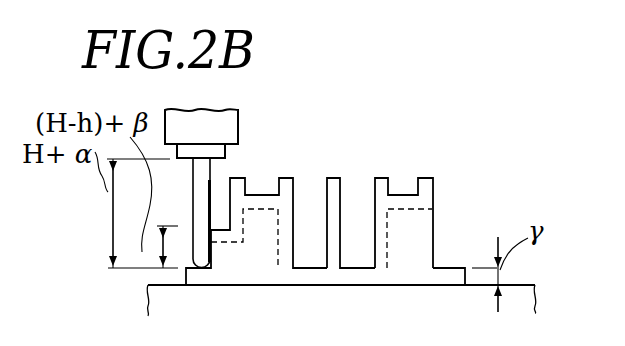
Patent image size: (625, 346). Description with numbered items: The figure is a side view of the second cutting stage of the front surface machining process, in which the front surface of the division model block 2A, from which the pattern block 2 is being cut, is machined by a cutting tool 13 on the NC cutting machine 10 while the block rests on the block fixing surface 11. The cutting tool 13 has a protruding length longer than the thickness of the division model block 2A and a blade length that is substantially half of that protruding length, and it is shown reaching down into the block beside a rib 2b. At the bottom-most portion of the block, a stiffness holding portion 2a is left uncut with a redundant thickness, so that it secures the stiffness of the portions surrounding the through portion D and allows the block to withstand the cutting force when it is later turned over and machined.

The pattern block 2 is at (334, 204).
The division model block 2A is at (427, 178).
The stiffness holding portion 2a is at (451, 268).
The rib 2b is at (334, 178).
The NC cutting machine 10 is at (147, 300).
The block fixing surface 11 is at (515, 284).
The cutting tool 13 is at (208, 183).
The through portion D is at (352, 250).